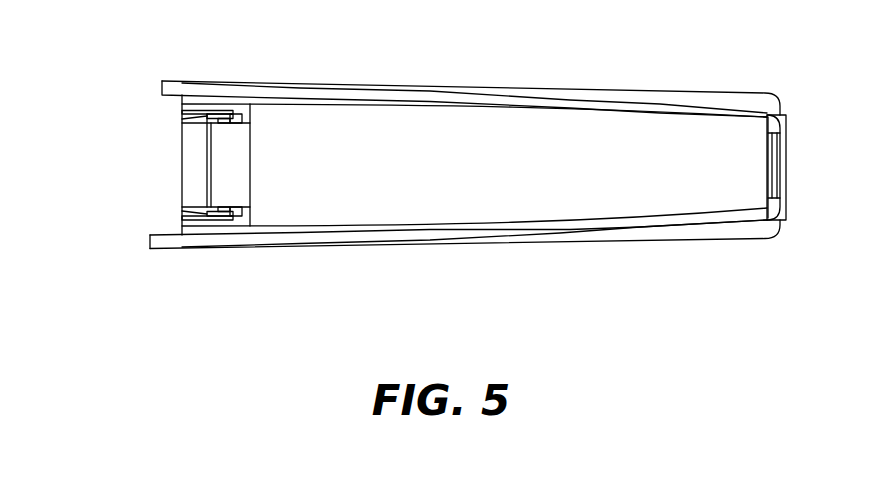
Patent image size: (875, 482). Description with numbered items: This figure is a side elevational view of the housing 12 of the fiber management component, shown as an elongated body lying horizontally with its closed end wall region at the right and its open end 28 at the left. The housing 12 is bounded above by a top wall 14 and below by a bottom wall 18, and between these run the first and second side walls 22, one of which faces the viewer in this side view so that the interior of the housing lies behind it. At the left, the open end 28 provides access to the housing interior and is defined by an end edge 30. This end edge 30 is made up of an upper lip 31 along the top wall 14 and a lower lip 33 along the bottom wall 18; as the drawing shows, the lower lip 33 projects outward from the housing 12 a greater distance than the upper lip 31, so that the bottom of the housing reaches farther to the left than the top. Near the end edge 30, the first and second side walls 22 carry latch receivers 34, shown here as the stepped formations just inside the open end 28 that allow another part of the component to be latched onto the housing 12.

The housing 12 is at (748, 153).
The top wall 14 is at (610, 88).
The bottom wall 18 is at (588, 243).
The side walls 22 is at (438, 195).
The open end 28 is at (156, 134).
The end edge 30 is at (149, 241).
The upper lip 31 is at (170, 88).
The lower lip 33 is at (170, 250).
The latch receivers 34 is at (237, 187).